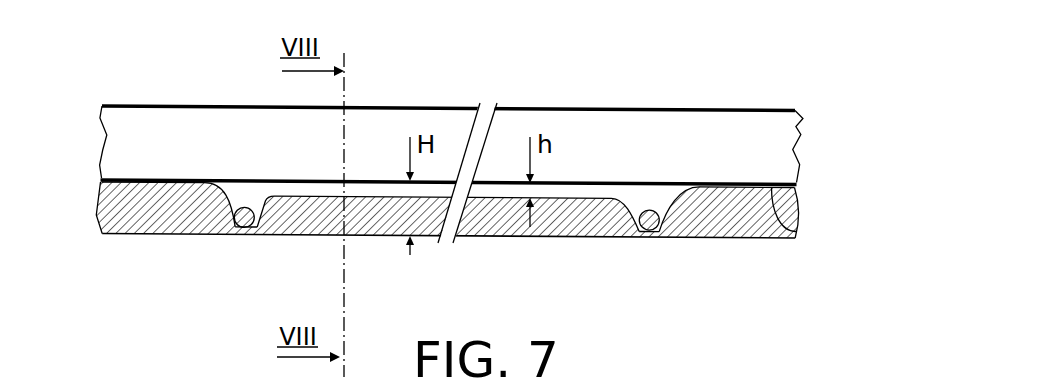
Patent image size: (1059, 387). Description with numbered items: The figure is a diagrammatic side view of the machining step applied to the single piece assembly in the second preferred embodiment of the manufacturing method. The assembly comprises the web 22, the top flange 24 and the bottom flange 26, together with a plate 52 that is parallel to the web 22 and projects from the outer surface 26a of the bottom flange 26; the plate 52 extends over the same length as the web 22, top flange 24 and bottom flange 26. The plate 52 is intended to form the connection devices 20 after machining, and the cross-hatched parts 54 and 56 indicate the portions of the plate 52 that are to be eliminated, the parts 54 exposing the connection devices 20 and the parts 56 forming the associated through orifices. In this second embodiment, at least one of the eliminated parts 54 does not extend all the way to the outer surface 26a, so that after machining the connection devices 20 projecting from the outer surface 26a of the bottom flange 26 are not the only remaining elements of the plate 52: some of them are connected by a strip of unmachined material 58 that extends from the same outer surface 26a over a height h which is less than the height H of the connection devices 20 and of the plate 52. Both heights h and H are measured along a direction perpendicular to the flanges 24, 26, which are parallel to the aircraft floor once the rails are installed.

The connection devices 20 is at (248, 197).
The web 22 is at (787, 130).
The top flange 24 is at (795, 110).
The bottom flange 26 is at (797, 185).
The outer surface of the bottom flange 26a is at (798, 227).
The plate 52 is at (80, 207).
The removed parts 54 is at (128, 220).
The cross-hatched parts 56 is at (246, 230).
The strip of unmachined material 58 is at (582, 192).